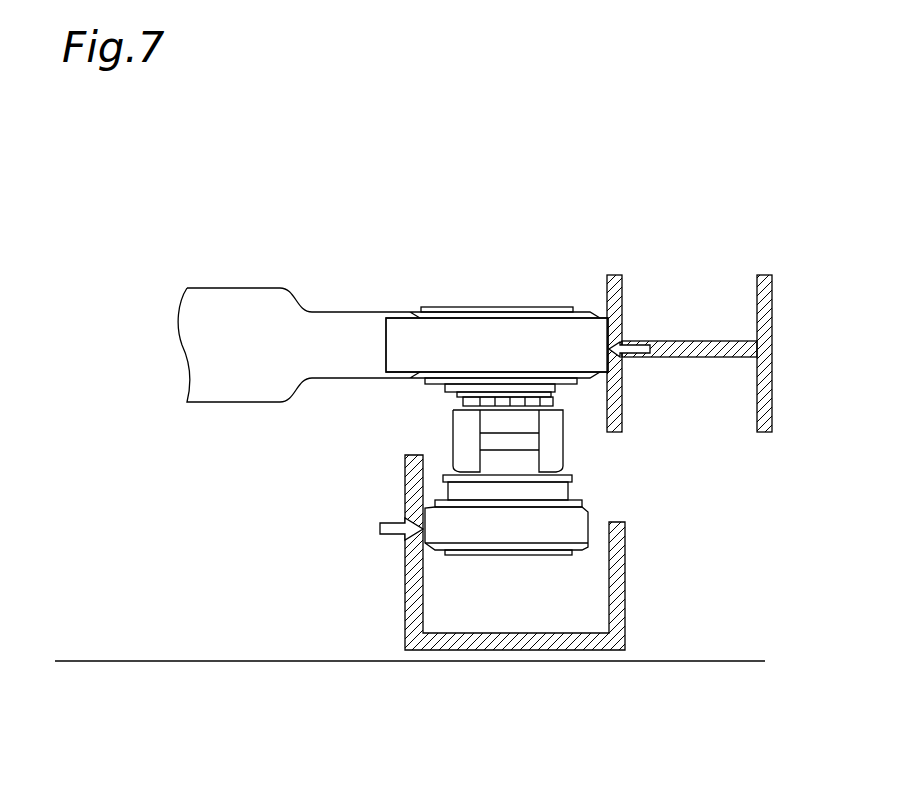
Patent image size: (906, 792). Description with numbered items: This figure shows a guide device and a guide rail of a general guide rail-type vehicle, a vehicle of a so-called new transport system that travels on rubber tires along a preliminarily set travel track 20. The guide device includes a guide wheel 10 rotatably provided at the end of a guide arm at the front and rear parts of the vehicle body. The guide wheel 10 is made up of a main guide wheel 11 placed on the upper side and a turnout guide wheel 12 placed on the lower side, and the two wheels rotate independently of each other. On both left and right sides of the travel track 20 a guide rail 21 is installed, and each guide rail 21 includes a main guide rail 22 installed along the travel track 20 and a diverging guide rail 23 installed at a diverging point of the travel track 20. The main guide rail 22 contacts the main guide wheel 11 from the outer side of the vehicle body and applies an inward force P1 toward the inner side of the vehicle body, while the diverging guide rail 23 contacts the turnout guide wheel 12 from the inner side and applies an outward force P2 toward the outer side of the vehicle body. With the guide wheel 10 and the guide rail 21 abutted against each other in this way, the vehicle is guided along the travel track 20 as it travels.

The guide wheel 10 is at (405, 278).
The main guide wheel 11 is at (534, 340).
The turnout guide wheel 12 is at (523, 538).
The travel track 20 is at (108, 660).
The guide rail 21 is at (740, 462).
The main guide rail 22 is at (615, 275).
The diverging guide rail 23 is at (458, 648).
The inward force P1 is at (635, 334).
The outward force P2 is at (383, 528).